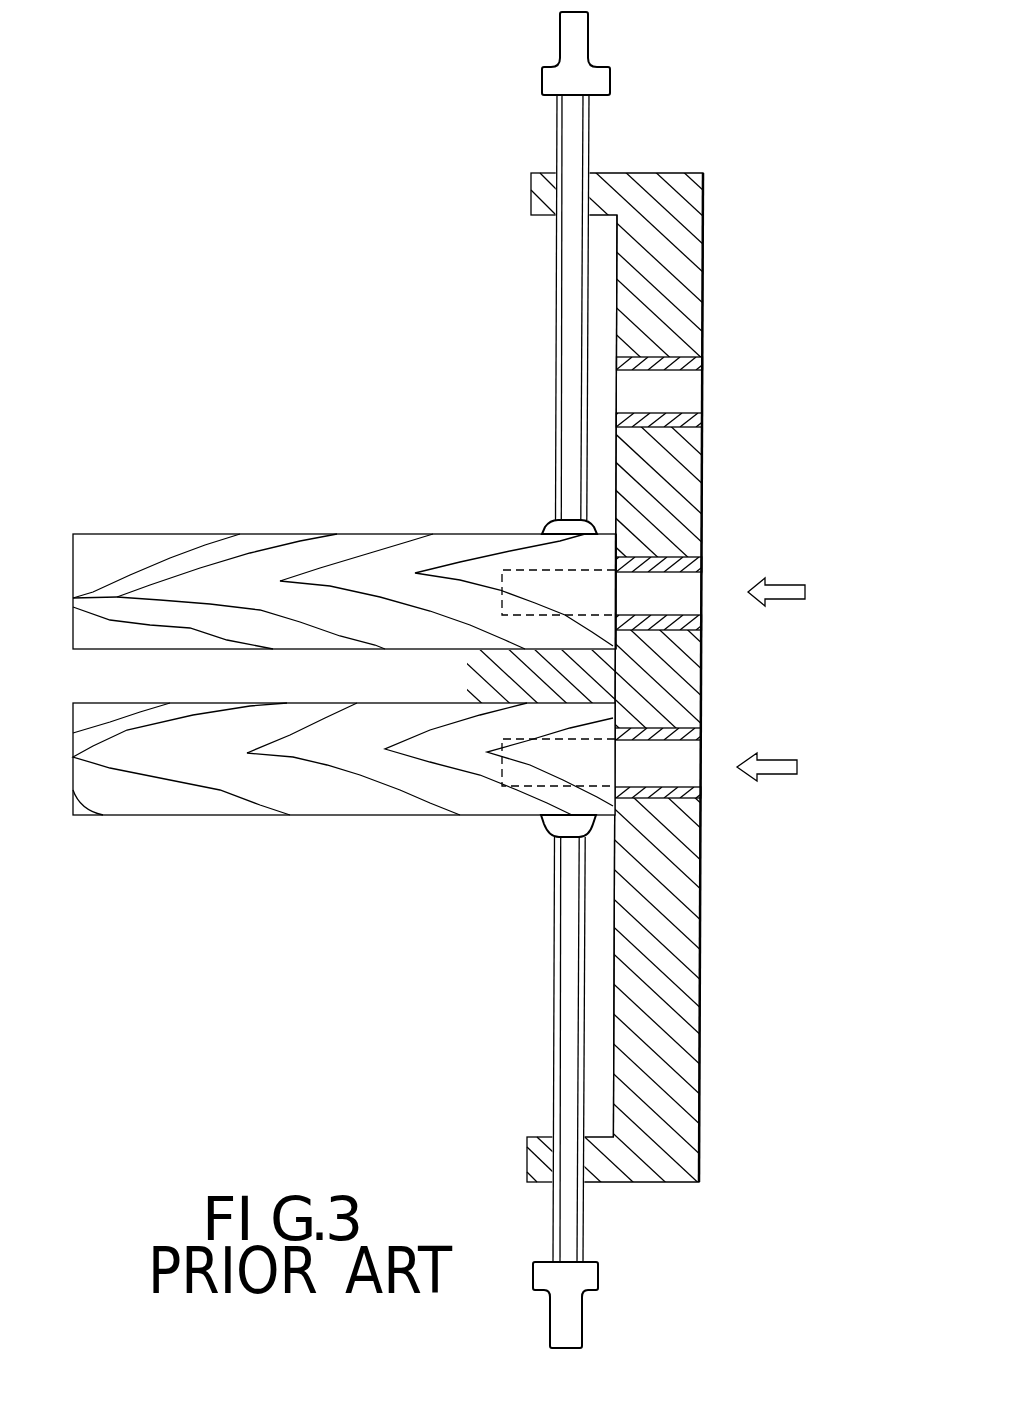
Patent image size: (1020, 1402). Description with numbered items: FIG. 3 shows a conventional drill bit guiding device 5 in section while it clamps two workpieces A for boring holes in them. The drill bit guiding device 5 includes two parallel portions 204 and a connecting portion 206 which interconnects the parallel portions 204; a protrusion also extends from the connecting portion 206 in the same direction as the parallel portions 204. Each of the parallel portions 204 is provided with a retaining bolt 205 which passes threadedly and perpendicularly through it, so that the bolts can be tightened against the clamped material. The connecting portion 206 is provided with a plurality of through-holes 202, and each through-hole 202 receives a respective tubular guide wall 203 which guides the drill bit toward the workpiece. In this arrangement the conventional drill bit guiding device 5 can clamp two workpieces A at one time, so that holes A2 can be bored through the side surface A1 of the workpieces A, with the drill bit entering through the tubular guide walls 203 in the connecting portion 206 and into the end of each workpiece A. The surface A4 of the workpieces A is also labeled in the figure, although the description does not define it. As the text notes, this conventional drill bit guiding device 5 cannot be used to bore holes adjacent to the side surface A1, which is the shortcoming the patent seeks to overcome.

The drill bit guiding device 5 is at (617, 678).
The through-holes 202 is at (695, 562).
The tubular guide wall 203 is at (700, 620).
The parallel portions 204 is at (542, 194).
The retaining bolt 205 is at (556, 299).
The connecting portion 206 is at (693, 1074).
The workpieces A is at (415, 676).
The side surface A1 is at (620, 556).
The holes A2 is at (523, 570).
The side surface of bar A4 is at (322, 534).